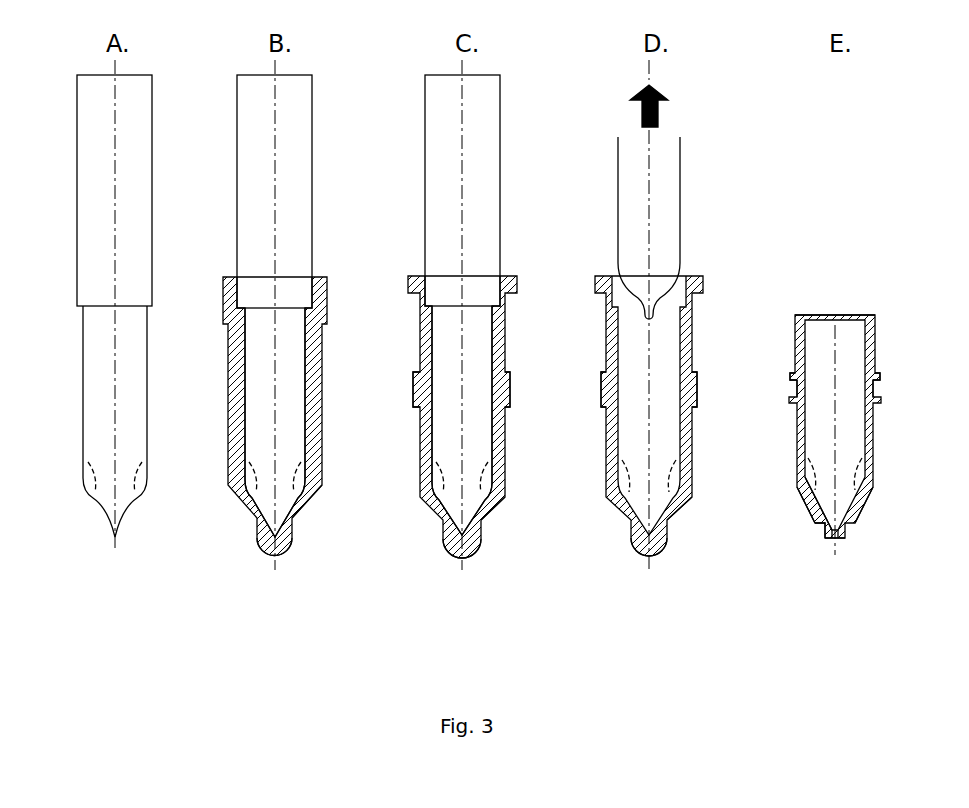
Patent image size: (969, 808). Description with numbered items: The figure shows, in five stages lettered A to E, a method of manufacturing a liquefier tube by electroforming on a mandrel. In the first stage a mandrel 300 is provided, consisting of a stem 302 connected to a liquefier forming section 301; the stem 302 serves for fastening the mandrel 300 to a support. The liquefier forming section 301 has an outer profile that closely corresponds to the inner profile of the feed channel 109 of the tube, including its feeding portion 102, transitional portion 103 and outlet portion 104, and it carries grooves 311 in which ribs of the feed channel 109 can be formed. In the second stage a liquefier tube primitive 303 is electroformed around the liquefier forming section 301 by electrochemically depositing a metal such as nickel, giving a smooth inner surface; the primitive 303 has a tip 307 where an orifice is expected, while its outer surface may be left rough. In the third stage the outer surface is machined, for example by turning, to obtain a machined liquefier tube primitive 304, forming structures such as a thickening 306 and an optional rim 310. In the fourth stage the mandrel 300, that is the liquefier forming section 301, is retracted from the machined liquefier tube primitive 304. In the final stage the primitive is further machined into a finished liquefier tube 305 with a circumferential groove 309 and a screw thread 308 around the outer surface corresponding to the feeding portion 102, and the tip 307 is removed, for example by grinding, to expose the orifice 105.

The mandrel 300 is at (160, 60).
The liquefier forming section 301 is at (417, 337).
The stem 302 is at (320, 191).
The liquefier tube primitive 303 is at (312, 507).
The machined liquefier tube primitive 304 is at (609, 533).
The finished liquefier tube 305 is at (806, 514).
The thickening 306 is at (646, 405).
The tip 307 is at (436, 581).
The screw thread 308 is at (794, 322).
The circumferential groove 309 is at (795, 388).
The rim 310 is at (496, 392).
The grooves 311 is at (450, 507).
The feeding portion 102 is at (782, 338).
The transitional portion 103 is at (787, 482).
The outlet portion 104 is at (819, 536).
The orifice 105 is at (833, 541).
The feed channel 109 is at (835, 313).